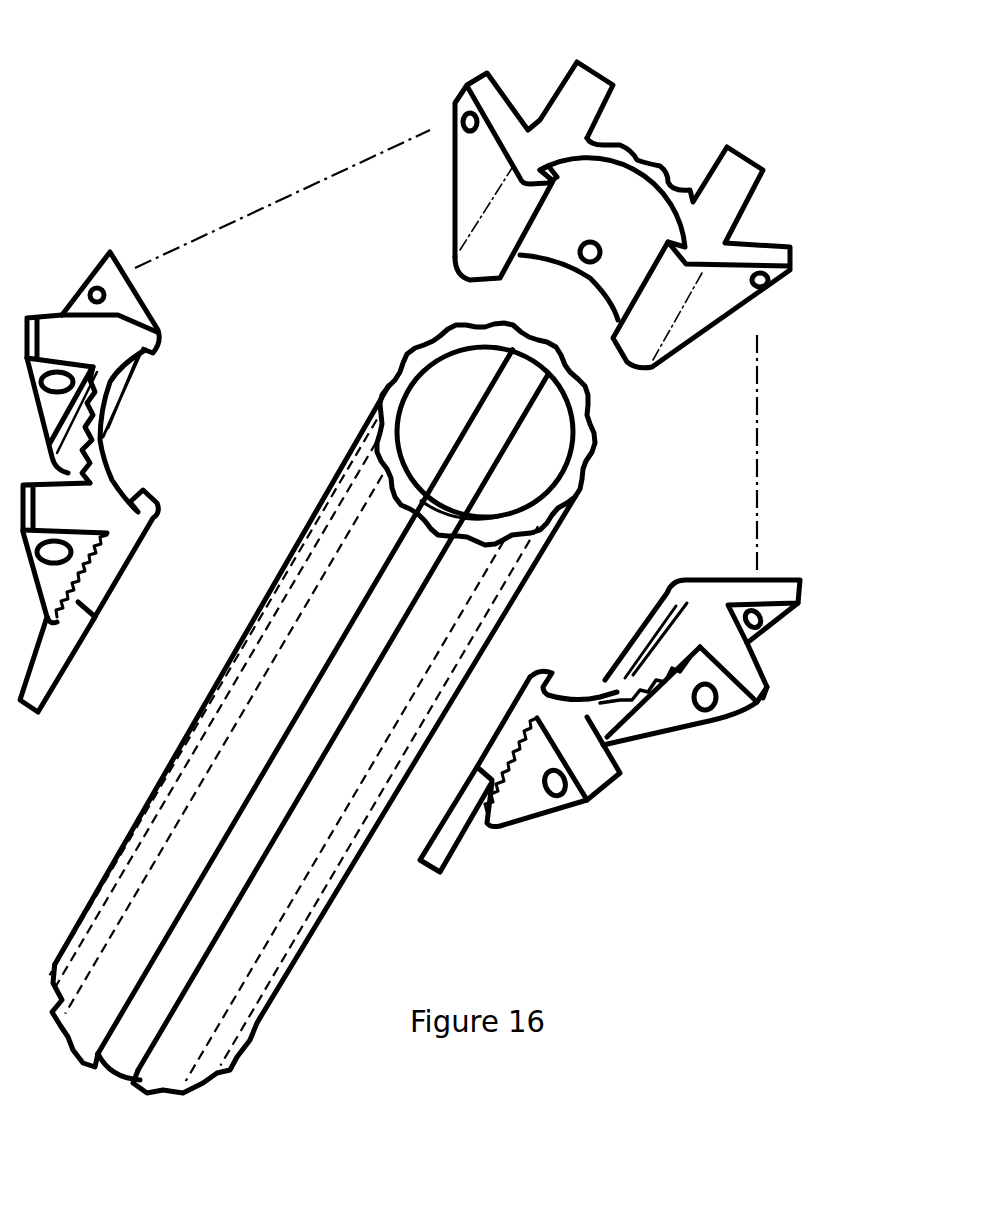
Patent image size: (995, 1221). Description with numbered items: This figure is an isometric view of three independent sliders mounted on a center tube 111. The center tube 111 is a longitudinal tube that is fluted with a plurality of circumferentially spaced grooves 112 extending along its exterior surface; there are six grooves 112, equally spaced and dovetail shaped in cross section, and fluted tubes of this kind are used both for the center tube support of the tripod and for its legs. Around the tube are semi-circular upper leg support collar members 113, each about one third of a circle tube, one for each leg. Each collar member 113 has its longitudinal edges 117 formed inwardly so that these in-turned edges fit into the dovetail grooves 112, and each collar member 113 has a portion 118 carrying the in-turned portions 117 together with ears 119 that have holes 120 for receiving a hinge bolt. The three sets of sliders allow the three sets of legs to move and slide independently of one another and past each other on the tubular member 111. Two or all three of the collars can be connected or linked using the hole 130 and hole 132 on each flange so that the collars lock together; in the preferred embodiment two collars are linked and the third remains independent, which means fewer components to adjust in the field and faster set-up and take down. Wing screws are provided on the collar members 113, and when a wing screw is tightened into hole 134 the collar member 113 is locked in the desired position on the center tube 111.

The center tube 111 is at (408, 367).
The grooves 112 is at (587, 427).
The upper leg support collar members 113 is at (458, 443).
The longitudinal edges 117 is at (531, 173).
The portion 118 is at (603, 683).
The ears 119 is at (763, 703).
The holes 120 is at (567, 793).
The hole 130 is at (769, 284).
The hole 132 is at (760, 617).
The hole 134 is at (579, 252).